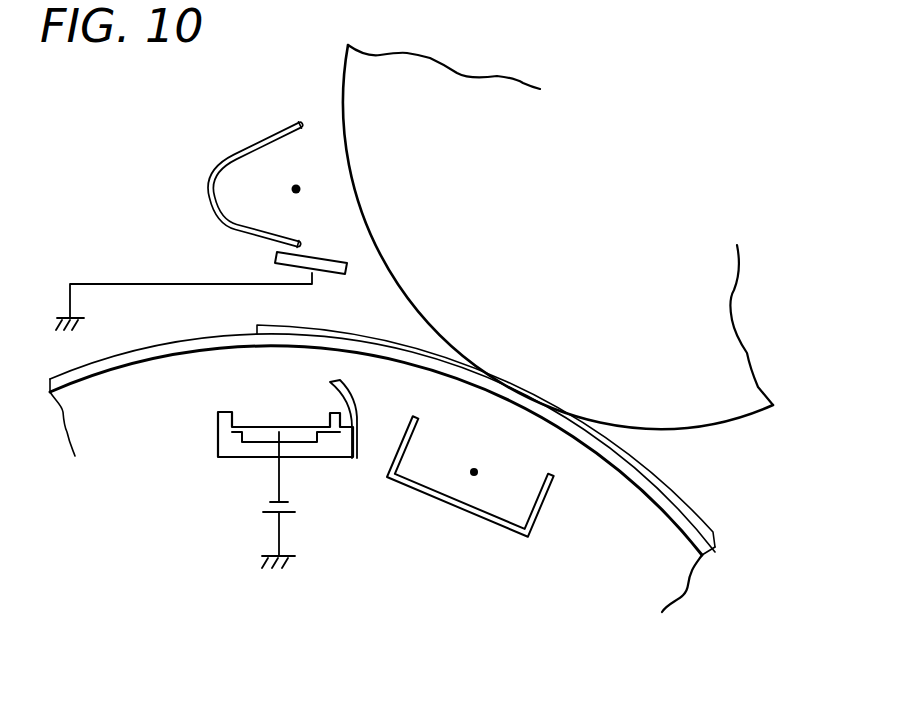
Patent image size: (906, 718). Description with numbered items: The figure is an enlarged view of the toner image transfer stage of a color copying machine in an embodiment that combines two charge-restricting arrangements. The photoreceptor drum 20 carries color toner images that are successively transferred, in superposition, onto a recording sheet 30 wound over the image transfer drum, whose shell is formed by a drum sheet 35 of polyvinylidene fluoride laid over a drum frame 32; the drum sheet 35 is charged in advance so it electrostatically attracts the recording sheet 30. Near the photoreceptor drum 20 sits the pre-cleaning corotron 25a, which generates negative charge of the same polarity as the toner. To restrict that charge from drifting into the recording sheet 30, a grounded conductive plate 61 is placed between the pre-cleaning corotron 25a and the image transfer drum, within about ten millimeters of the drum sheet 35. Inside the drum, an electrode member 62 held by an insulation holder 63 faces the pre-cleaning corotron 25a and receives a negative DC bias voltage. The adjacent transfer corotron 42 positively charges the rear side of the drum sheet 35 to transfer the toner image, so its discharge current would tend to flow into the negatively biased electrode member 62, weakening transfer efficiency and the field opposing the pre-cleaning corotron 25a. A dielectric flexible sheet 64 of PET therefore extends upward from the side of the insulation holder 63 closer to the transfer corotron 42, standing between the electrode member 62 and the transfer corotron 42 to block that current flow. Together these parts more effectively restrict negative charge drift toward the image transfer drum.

The photoreceptor drum 20 is at (745, 418).
The pre-cleaning corotron 25a is at (260, 141).
The recording sheet 30 is at (687, 497).
The drum frame 32 is at (148, 368).
The drum sheet 35 is at (90, 380).
The transfer corotron 42 is at (483, 522).
The conductive plate 61 is at (335, 276).
The electrode member 62 is at (258, 435).
The insulation holder 63 is at (228, 448).
The flexible sheet 64 is at (357, 400).